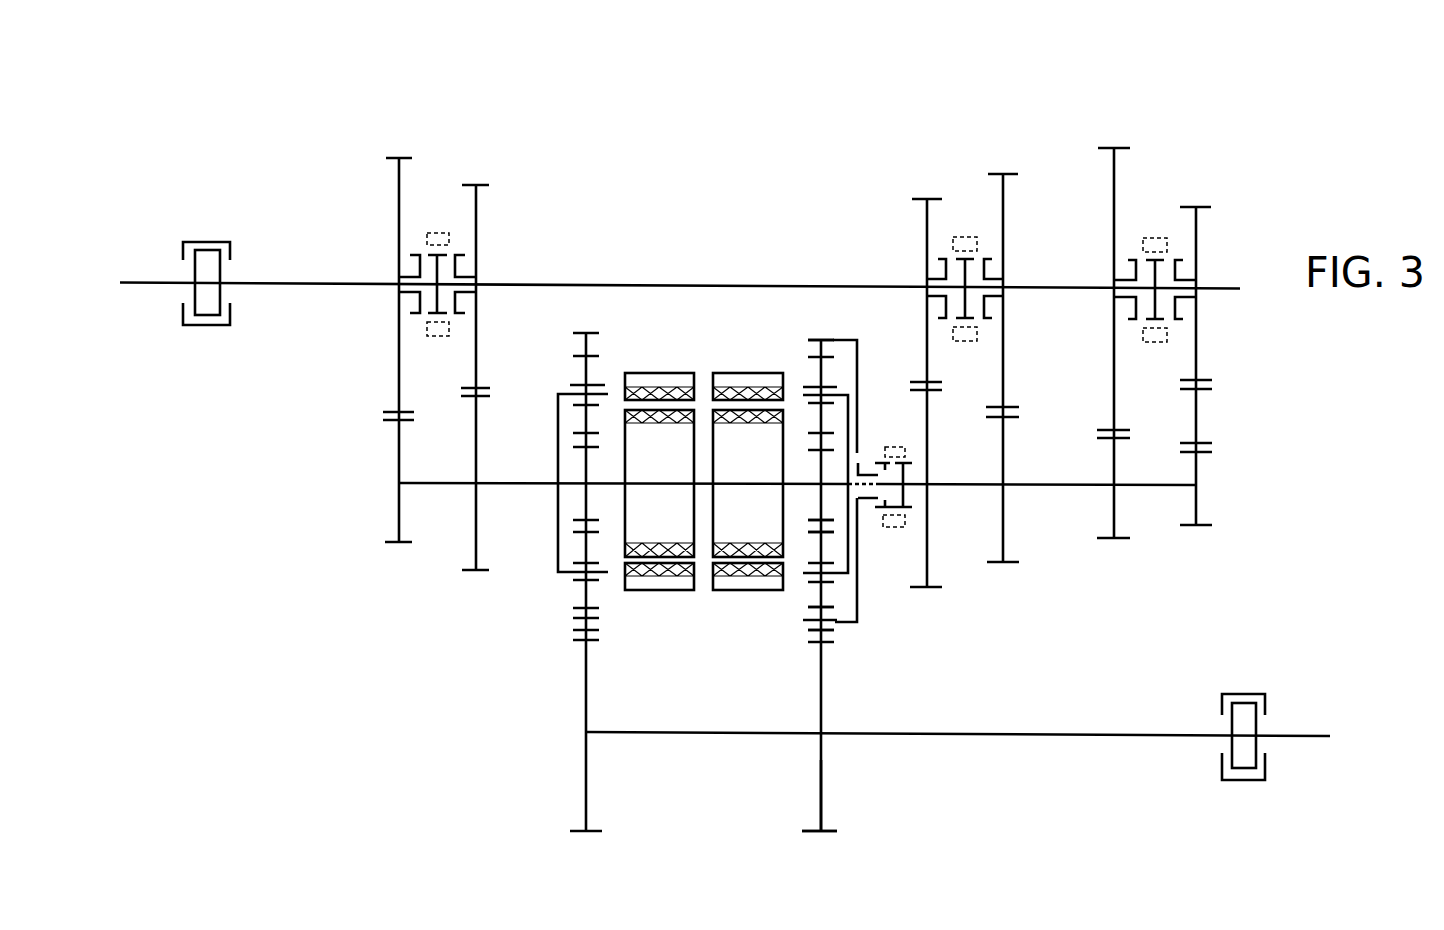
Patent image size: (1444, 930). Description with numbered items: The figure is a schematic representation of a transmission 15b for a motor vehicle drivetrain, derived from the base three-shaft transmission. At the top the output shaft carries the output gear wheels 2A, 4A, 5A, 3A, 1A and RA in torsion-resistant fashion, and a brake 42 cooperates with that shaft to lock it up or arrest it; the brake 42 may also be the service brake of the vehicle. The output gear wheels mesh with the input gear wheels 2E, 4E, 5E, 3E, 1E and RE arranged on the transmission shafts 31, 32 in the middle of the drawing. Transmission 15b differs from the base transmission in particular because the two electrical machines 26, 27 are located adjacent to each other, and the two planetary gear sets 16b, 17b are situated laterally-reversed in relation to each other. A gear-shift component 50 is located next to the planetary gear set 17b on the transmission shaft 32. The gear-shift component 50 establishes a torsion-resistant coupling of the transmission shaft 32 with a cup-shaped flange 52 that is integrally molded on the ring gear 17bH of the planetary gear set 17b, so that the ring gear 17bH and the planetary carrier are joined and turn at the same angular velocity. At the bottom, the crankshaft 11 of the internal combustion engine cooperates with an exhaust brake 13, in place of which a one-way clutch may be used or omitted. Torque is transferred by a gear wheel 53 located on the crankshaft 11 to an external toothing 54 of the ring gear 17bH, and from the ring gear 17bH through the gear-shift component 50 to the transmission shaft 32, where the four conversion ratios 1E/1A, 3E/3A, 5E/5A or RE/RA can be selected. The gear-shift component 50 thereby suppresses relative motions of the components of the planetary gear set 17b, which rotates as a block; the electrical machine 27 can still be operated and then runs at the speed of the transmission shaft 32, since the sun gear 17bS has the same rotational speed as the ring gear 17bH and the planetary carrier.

The transmission 15b is at (700, 252).
The brake 42 is at (215, 242).
The output gear wheel 2A is at (402, 219).
The input gear wheel 2E is at (397, 435).
The output gear wheel 4A is at (472, 232).
The input gear wheel 4E is at (474, 449).
The transmission shaft 31 is at (425, 481).
The transmission shaft 32 is at (1140, 484).
The planetary gear set 16b is at (556, 544).
The electrical machine 26 is at (660, 378).
The electrical machine 27 is at (743, 378).
The planetary gear set 17b is at (851, 458).
The external toothing 54 is at (821, 339).
The sun gear 17bS is at (818, 504).
The ring gear 17bH is at (810, 621).
The cup-shaped flange 52 is at (859, 626).
The gear-shift component 50 is at (897, 527).
The output gear wheel 5A is at (929, 238).
The input gear wheel 5E is at (925, 460).
The output gear wheel 3A is at (1001, 225).
The input gear wheel 3E is at (1002, 450).
The output gear wheel 1A is at (1117, 213).
The input gear wheel 1E is at (1113, 435).
The output gear wheel RA is at (1194, 242).
The input gear wheel RE is at (1196, 430).
The crankshaft 11 is at (1051, 737).
The gear wheel 53 is at (823, 800).
The exhaust brake 13 is at (1250, 691).